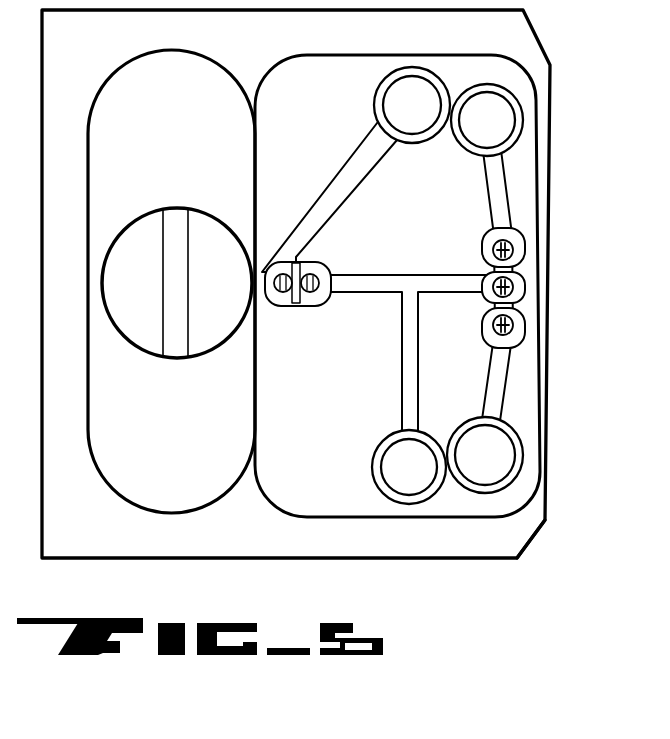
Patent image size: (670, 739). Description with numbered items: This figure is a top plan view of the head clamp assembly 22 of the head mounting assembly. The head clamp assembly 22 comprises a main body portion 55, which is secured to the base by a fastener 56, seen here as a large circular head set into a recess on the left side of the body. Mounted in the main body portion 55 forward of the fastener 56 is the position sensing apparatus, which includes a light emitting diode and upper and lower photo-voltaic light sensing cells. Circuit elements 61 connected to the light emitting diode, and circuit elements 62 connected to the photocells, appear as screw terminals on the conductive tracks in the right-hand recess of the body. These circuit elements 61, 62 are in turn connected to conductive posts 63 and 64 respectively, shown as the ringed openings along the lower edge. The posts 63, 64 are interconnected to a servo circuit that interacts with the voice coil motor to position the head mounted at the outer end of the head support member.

The head clamp assembly 22 is at (488, 568).
The main body portion 55 is at (515, 533).
The fastener 56 is at (143, 231).
The circuit elements 61 is at (307, 295).
The circuit elements 62 is at (508, 252).
The conductive post 63 is at (403, 466).
The conductive post 64 is at (500, 458).